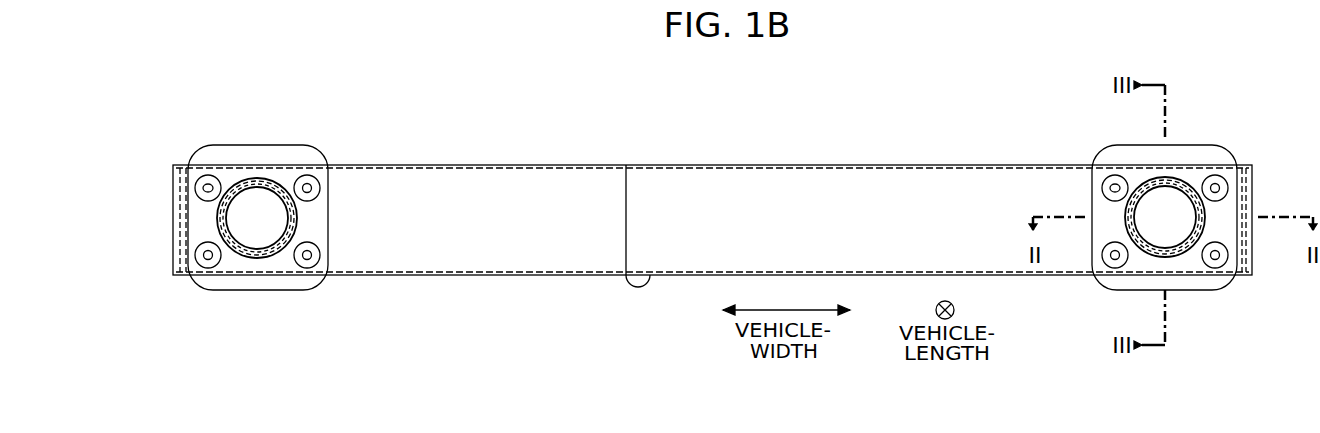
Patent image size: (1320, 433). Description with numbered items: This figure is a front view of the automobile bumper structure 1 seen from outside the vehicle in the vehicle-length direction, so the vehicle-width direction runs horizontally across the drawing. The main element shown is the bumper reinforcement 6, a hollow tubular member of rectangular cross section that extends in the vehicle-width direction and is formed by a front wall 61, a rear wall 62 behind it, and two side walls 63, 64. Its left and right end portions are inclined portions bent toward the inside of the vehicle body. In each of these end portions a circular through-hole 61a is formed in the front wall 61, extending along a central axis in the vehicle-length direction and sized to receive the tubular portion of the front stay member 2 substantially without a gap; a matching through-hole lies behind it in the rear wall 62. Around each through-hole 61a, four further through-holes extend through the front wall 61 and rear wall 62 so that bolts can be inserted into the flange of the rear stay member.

The automobile bumper structure 1 is at (486, 121).
The front stay member 2 is at (258, 178).
The bumper reinforcement 6 is at (793, 90).
The front wall 61 is at (700, 210).
The through-hole 61a is at (266, 258).
The rear wall 62 is at (770, 225).
The side wall 63 is at (660, 166).
The side wall 64 is at (626, 165).